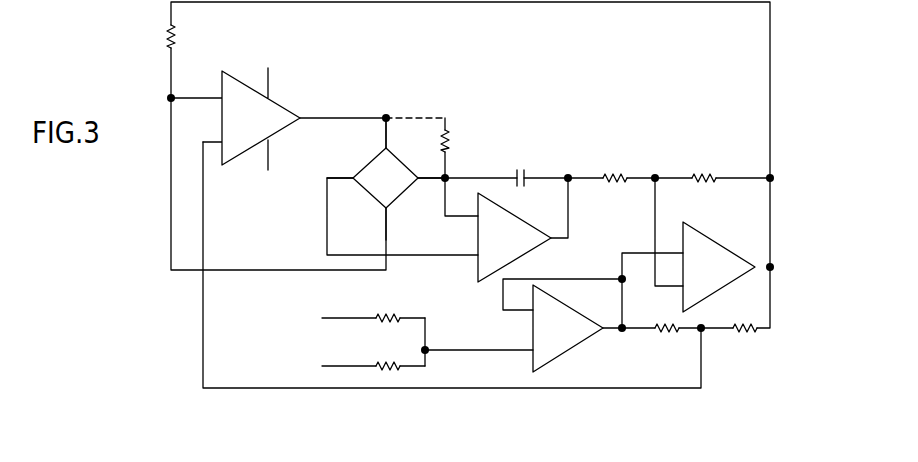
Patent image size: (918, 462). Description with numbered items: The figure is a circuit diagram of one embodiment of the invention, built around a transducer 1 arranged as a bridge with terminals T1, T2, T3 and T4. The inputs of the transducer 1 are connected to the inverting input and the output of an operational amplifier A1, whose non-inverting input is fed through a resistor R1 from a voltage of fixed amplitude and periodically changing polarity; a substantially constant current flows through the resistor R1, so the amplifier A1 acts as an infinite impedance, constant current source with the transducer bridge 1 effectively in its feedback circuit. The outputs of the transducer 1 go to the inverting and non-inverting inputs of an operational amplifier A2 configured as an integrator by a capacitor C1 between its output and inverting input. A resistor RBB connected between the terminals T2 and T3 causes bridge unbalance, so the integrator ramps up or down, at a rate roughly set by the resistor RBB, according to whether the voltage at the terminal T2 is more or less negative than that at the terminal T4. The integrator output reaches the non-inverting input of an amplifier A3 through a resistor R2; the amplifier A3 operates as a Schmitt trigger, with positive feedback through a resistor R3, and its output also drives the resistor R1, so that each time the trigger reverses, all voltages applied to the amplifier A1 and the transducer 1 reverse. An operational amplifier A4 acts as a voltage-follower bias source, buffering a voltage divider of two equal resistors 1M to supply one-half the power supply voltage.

The resistor R1 is at (157, 38).
The operational amplifier A1 is at (235, 118).
The transducer 1 is at (372, 158).
The terminal T1 is at (397, 224).
The terminal T2 is at (427, 161).
The terminal T3 is at (396, 133).
The terminal T4 is at (340, 160).
The resistor RBB is at (462, 142).
The capacitor C1 is at (521, 165).
The resistor R2 is at (615, 163).
The resistor R3 is at (704, 163).
The operational amplifier A2 is at (514, 237).
The amplifier A3 is at (719, 267).
The operational amplifier A4 is at (568, 328).
The resistors 1M is at (373, 329).